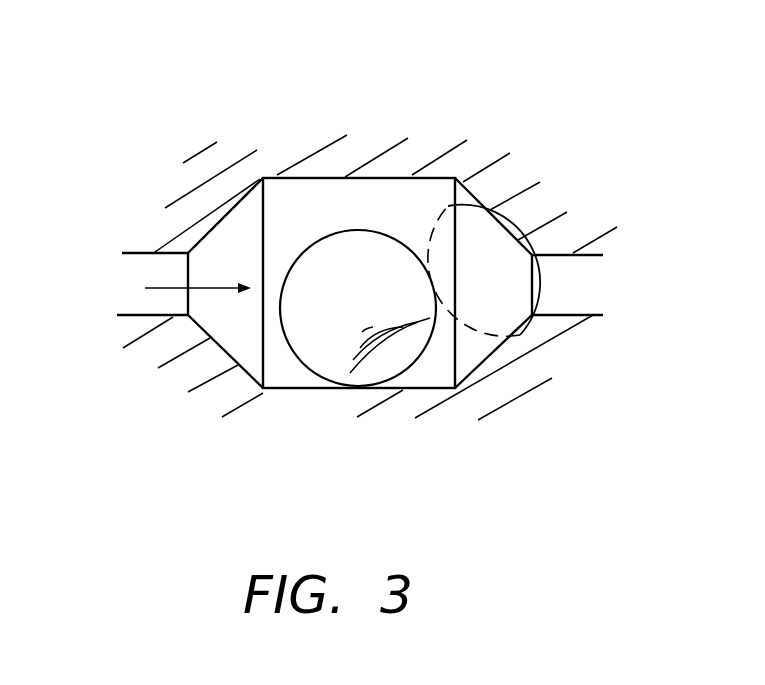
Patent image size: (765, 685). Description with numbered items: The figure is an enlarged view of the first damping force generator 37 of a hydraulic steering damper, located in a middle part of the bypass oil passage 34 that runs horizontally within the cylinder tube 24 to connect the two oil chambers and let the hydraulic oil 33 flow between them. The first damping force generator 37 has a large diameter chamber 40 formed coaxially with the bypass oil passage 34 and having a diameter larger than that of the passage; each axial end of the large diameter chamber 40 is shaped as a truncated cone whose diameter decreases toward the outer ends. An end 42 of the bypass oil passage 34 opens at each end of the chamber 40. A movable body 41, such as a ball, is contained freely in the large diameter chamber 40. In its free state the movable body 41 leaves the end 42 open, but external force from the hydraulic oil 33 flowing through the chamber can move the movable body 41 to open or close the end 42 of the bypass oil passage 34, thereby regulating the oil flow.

The cylinder tube 24 is at (427, 150).
The hydraulic oil 33 is at (227, 288).
The bypass oil passage 34 is at (130, 268).
The first damping force generator 37 is at (368, 141).
The large diameter chamber 40 is at (282, 390).
The movable body 41 is at (433, 362).
The end of the bypass oil passage 42 is at (173, 302).